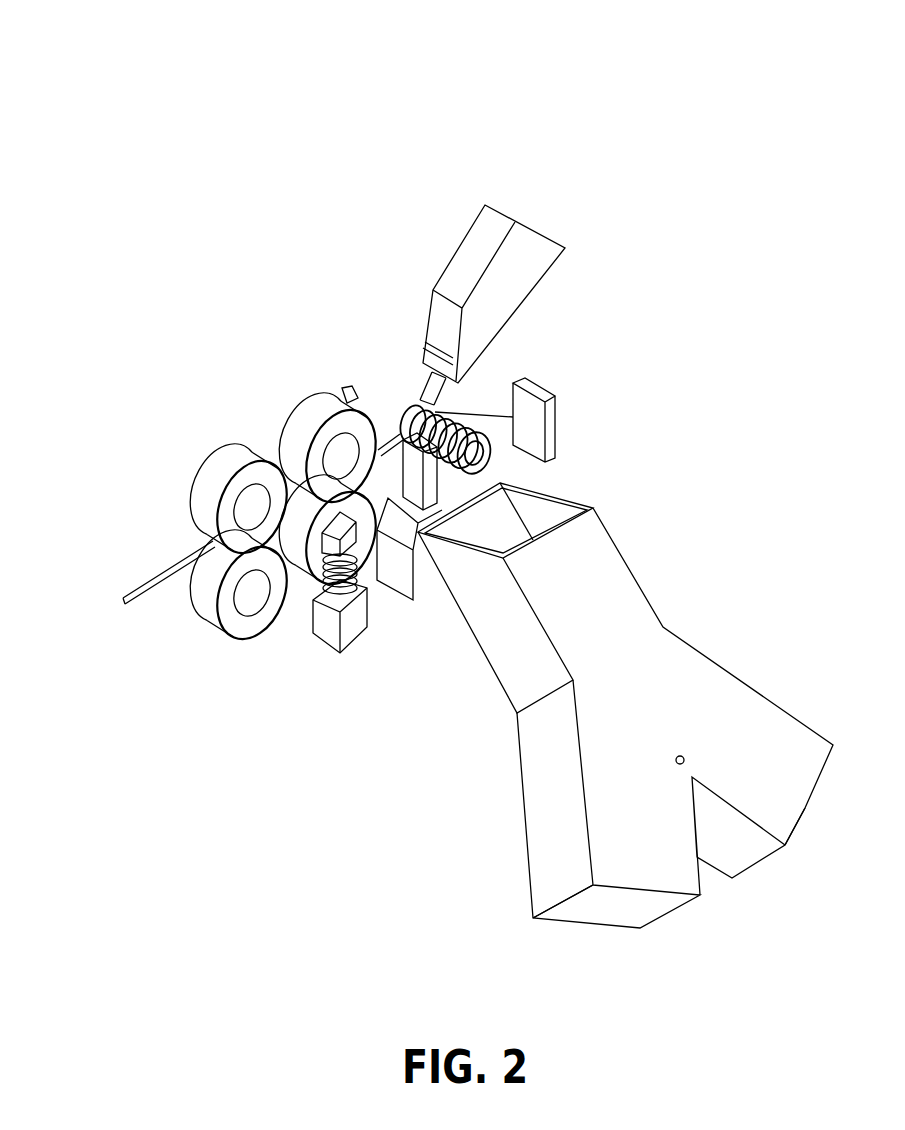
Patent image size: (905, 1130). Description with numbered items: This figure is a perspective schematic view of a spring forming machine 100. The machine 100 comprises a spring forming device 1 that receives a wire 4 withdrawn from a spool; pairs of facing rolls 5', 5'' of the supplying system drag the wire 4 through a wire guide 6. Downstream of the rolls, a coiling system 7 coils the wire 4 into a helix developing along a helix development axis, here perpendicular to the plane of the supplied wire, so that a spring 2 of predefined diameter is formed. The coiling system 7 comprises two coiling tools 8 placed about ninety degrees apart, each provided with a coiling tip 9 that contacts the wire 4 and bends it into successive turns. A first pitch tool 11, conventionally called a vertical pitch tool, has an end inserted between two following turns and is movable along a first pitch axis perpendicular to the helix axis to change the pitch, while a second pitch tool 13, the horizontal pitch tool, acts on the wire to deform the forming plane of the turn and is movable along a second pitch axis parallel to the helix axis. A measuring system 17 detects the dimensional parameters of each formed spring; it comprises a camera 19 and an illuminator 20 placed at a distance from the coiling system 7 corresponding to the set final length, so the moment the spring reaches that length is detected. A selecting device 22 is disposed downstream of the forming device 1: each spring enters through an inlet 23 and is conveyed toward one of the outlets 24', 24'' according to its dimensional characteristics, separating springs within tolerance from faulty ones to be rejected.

The spring forming machine 100 is at (672, 152).
The spring forming device 1 is at (267, 371).
The spring 2 is at (463, 428).
The wire 4 is at (172, 570).
The facing rolls 5' is at (230, 479).
The lower rollers 5'' is at (236, 609).
The wire guide 6 is at (382, 462).
The coiling system 7 is at (414, 283).
The coiling tools 8 is at (500, 248).
The coiling tips 9 is at (428, 390).
The first pitch tool 11 is at (420, 568).
The second pitch tool 13 is at (350, 393).
The measuring system 17 is at (383, 642).
The camera 19 is at (337, 533).
The illuminator 20 is at (542, 402).
The selecting device 22 is at (602, 597).
The inlet 23 is at (525, 518).
The outlet 24' is at (572, 940).
The outlet 24'' is at (833, 837).